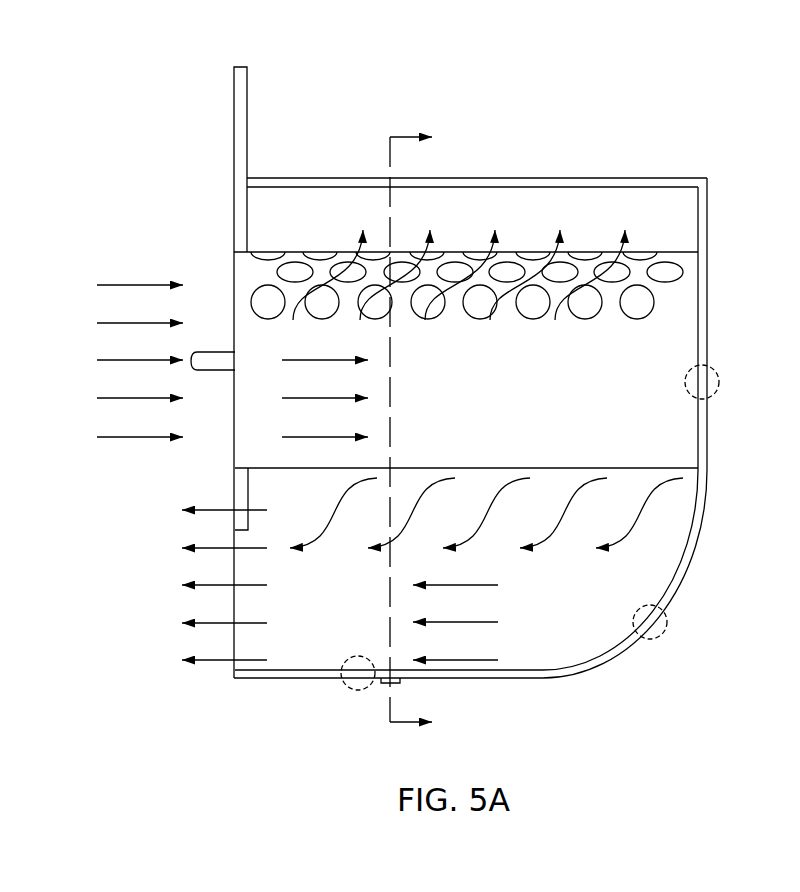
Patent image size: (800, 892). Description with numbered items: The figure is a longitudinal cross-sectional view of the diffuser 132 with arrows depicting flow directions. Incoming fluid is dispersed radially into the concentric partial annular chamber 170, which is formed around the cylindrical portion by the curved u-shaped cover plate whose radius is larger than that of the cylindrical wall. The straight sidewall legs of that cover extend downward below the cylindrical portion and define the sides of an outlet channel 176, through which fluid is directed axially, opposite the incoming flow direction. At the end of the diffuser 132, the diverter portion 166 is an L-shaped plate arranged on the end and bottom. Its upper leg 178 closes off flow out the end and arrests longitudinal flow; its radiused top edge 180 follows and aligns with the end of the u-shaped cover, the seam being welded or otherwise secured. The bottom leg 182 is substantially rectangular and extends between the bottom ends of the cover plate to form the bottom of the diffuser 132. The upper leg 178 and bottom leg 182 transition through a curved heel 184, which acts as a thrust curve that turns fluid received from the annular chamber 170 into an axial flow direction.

The diffuser 132 is at (597, 91).
The annular chamber 170 is at (284, 217).
The radiused top edge 180 is at (708, 222).
The upper leg 178 is at (720, 382).
The diverter portion 166 is at (682, 602).
The curved heel 184 is at (664, 634).
The outlet channel 176 is at (302, 642).
The bottom leg 182 is at (360, 690).